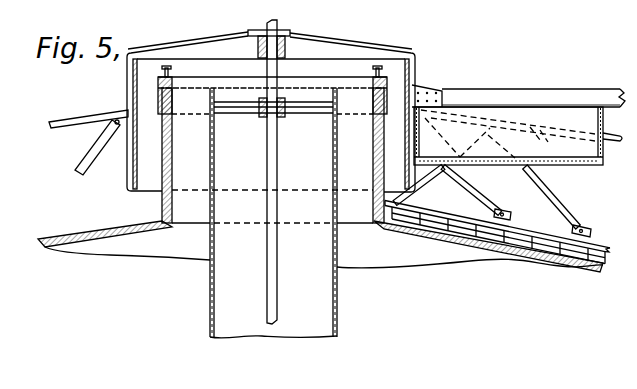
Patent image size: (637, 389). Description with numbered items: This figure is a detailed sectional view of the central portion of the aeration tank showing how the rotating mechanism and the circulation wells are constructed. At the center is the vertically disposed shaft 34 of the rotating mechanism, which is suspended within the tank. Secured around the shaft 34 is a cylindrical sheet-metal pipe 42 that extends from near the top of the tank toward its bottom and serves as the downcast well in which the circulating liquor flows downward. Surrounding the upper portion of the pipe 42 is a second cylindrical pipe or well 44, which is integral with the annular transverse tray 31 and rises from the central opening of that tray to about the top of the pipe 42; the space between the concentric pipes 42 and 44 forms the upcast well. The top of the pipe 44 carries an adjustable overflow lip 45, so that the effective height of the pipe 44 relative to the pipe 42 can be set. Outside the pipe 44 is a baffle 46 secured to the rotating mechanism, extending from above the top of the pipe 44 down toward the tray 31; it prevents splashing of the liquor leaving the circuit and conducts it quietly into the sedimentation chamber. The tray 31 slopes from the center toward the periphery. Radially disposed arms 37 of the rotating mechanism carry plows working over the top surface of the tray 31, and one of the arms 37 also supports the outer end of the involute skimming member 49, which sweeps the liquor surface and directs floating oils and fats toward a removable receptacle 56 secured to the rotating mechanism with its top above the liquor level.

The transverse tray 31 is at (418, 265).
The shaft 34 is at (278, 263).
The radial arms 37 is at (542, 232).
The cylindrical pipe 42 is at (332, 167).
The cylindrical pipe or well 44 is at (188, 217).
The adjustable overflow lip 45 is at (202, 84).
The baffle 46 is at (133, 86).
The involute skimming member 49 is at (580, 77).
The receptacle 56 is at (580, 153).